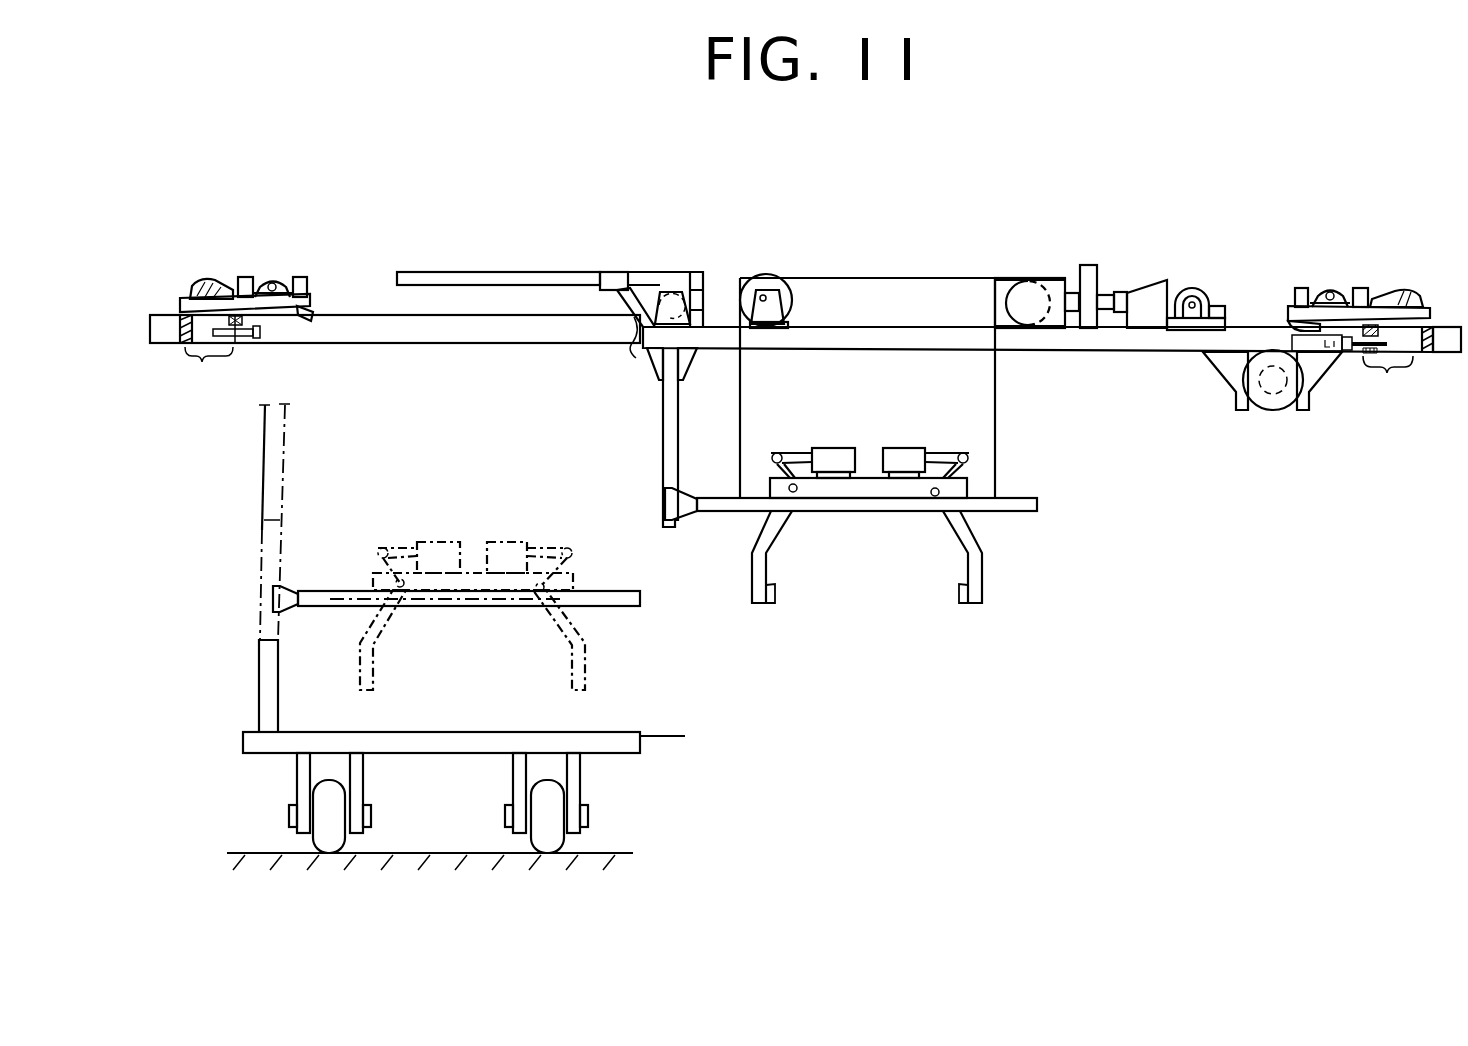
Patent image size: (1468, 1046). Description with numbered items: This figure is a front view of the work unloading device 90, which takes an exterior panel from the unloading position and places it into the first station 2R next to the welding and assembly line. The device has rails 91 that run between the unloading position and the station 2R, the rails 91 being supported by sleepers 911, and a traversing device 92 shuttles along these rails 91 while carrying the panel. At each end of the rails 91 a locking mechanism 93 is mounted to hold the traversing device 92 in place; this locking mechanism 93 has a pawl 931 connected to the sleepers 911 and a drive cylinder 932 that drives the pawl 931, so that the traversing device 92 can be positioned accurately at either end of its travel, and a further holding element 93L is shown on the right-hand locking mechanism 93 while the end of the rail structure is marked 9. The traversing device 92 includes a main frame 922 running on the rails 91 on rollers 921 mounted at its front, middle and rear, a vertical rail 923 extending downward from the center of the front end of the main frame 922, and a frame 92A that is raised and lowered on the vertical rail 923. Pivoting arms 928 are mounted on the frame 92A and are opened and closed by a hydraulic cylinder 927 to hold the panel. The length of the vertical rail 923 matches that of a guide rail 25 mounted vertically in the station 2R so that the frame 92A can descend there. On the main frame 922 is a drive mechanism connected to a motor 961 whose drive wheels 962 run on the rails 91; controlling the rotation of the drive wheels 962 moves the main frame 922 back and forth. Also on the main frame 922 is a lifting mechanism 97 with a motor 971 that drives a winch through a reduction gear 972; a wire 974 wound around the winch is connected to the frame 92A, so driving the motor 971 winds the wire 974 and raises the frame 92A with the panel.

The end cap of frame beam 9 is at (1450, 320).
The guide rail 25 is at (262, 652).
The first station 2R is at (655, 758).
The work unloading device 90 is at (1150, 595).
The rails 91 is at (355, 345).
The sleepers 911 is at (795, 367).
The traversing device 92 is at (848, 605).
The frame 92A is at (1003, 513).
The rollers 921 is at (666, 300).
The main frame 922 is at (921, 345).
The vertical rail 923 is at (665, 388).
The hydraulic cylinder 927 is at (830, 465).
The pivoting arms 928 is at (952, 525).
The locking mechanism 93 is at (330, 205).
The pawl 931 is at (316, 302).
The drive cylinder 932 is at (228, 282).
The holder block 93L is at (1385, 290).
The motor 961 is at (1270, 395).
The drive wheels 962 is at (1278, 408).
The lifting mechanism 97 is at (1000, 284).
The motor 971 is at (1052, 282).
The reduction gear 972 is at (1150, 290).
The wire 974 is at (996, 408).